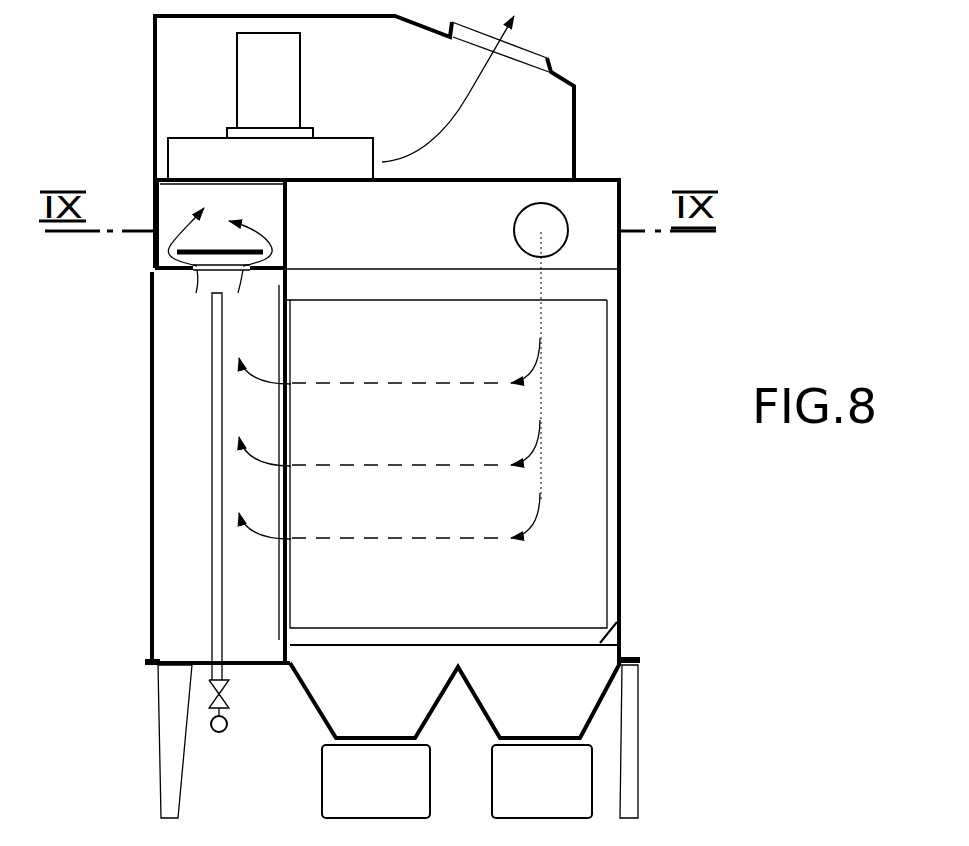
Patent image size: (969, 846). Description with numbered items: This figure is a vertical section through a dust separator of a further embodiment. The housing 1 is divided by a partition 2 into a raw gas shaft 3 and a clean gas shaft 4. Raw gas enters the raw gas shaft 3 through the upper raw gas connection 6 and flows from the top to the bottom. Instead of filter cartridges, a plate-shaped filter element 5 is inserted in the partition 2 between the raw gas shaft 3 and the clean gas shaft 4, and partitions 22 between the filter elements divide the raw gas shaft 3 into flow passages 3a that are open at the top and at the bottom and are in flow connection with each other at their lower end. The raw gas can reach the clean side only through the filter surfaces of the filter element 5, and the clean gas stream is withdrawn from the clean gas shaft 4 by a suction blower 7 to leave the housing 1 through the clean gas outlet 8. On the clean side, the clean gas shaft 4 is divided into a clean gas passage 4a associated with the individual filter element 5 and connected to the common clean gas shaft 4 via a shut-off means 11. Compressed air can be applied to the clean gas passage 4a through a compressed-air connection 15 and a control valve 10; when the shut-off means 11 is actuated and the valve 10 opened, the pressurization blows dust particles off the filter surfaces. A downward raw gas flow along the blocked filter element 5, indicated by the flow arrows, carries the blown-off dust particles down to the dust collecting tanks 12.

The housing 1 is at (624, 552).
The partition 2 is at (287, 248).
The raw gas shaft 3 is at (582, 198).
The flow passage 3a is at (427, 283).
The clean gas shaft 4 is at (180, 205).
The clean gas passage 4a is at (180, 472).
The filter element 5 is at (565, 477).
The raw gas connection 6 is at (537, 218).
The suction blower 7 is at (205, 153).
The clean gas outlet 8 is at (523, 55).
The valve 10 is at (210, 697).
The shut-off means 11 is at (227, 251).
The dust collecting tank 12 is at (355, 775).
The compressed-air connection 15 is at (218, 395).
The partition 22 is at (572, 285).